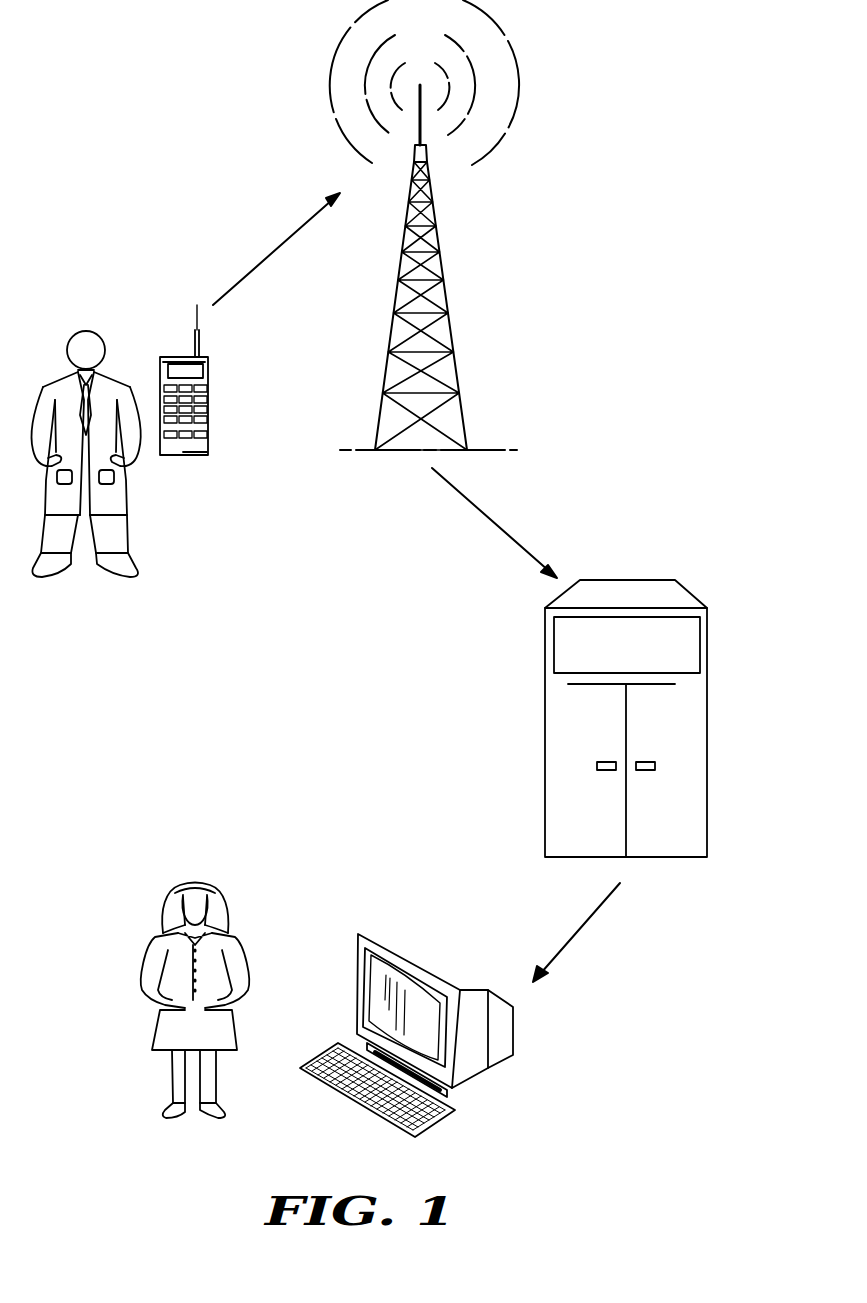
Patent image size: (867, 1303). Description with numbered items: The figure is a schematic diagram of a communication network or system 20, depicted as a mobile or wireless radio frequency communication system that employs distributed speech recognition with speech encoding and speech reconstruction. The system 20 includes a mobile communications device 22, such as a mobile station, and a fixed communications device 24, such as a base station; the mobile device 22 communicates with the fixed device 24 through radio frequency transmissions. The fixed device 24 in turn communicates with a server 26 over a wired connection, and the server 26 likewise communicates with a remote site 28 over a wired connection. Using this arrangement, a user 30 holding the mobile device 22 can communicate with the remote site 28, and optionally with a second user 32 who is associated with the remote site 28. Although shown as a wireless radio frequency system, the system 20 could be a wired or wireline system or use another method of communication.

The communication network or system 20 is at (301, 716).
The mobile communications device 22 is at (204, 438).
The fixed communications device 24 is at (463, 388).
The server 26 is at (707, 695).
The remote site 28 is at (513, 1036).
The user 30 is at (128, 508).
The user 32 is at (248, 988).